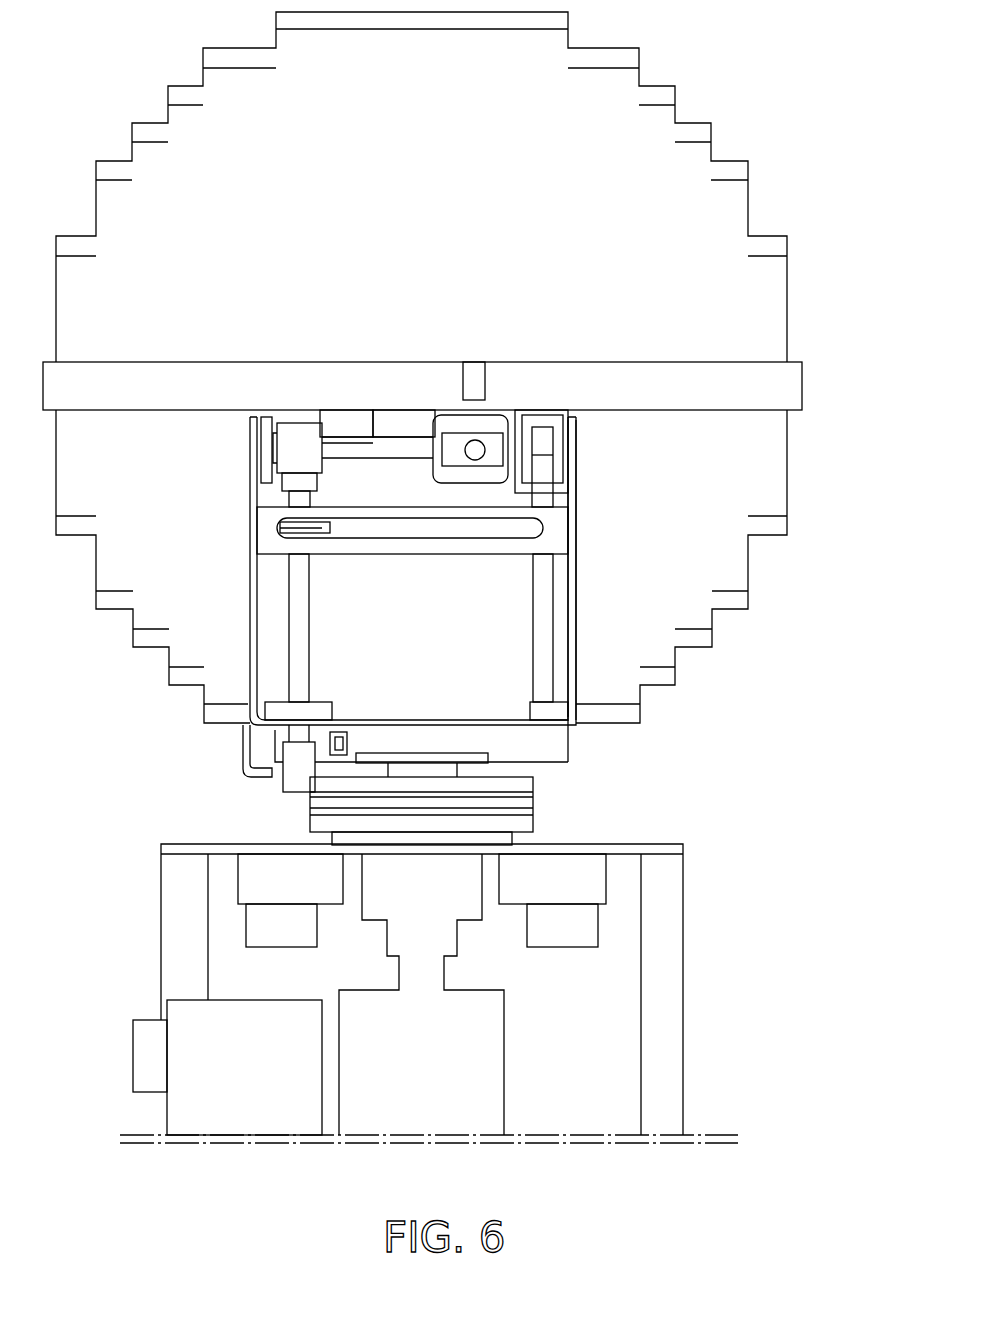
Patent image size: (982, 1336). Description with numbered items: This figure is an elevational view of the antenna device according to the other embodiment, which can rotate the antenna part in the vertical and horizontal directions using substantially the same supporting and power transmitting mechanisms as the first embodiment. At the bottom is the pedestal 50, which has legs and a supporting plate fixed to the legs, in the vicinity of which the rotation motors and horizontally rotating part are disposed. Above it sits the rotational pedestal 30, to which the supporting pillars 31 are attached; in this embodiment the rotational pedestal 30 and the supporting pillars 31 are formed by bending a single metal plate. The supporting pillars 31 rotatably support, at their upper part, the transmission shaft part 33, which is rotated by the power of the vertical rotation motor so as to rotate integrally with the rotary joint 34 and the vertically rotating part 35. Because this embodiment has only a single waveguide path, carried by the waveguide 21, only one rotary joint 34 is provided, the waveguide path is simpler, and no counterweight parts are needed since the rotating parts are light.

The waveguide 21 is at (547, 582).
The rotational pedestal 30 is at (513, 724).
The supporting pillars 31 is at (577, 579).
The transmission shaft part 33 is at (392, 443).
The rotary joint 34 is at (517, 430).
The vertically rotating part 35 is at (457, 416).
The pedestal 50 is at (698, 860).